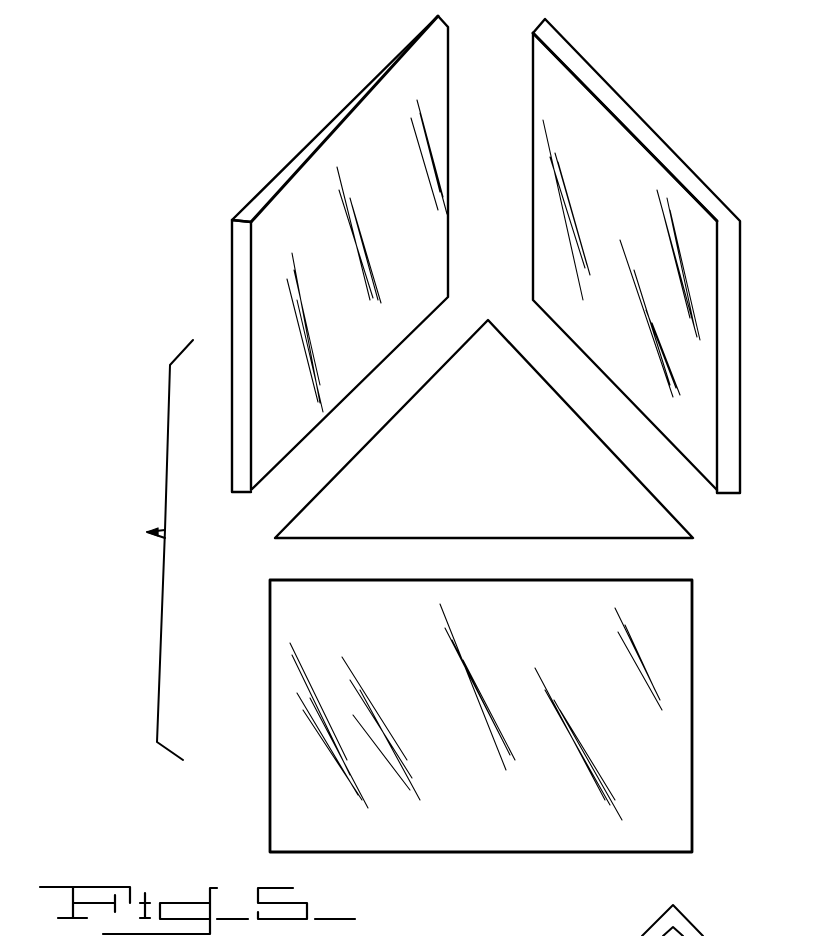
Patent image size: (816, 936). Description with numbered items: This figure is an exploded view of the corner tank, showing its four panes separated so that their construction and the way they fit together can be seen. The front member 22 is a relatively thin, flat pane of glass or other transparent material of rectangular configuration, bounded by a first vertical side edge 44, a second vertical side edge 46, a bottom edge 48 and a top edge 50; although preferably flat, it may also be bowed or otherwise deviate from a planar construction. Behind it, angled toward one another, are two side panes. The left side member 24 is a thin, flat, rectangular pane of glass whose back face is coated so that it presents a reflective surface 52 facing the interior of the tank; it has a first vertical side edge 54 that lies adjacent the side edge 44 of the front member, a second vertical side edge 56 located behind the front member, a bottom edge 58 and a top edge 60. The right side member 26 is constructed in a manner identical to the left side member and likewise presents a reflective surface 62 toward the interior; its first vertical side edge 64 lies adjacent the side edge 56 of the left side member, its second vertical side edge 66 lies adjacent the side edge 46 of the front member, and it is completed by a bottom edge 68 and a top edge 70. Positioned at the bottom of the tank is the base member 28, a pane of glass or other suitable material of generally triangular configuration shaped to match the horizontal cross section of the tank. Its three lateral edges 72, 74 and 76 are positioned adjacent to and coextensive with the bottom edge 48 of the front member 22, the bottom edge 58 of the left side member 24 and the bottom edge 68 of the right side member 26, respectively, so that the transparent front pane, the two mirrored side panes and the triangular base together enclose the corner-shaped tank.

The front member 22 is at (448, 717).
The left side member 24 is at (320, 137).
The right side member 26 is at (656, 128).
The base member 28 is at (502, 472).
The first vertical side edge 44 is at (270, 662).
The second vertical side edge 46 is at (692, 665).
The bottom edge 48 is at (468, 853).
The top edge 50 is at (542, 580).
The reflective surface 52 is at (376, 80).
The first vertical side edge 54 is at (240, 317).
The second vertical side edge 56 is at (447, 216).
The bottom edge 58 is at (241, 494).
The top edge 60 is at (263, 200).
The reflective surface 62 is at (606, 82).
The first vertical side edge 64 is at (530, 178).
The second vertical side edge 66 is at (730, 320).
The bottom edge 68 is at (730, 494).
The top edge 70 is at (703, 198).
The lateral edge 72 is at (382, 539).
The lateral edge 74 is at (383, 427).
The lateral edge 76 is at (590, 427).